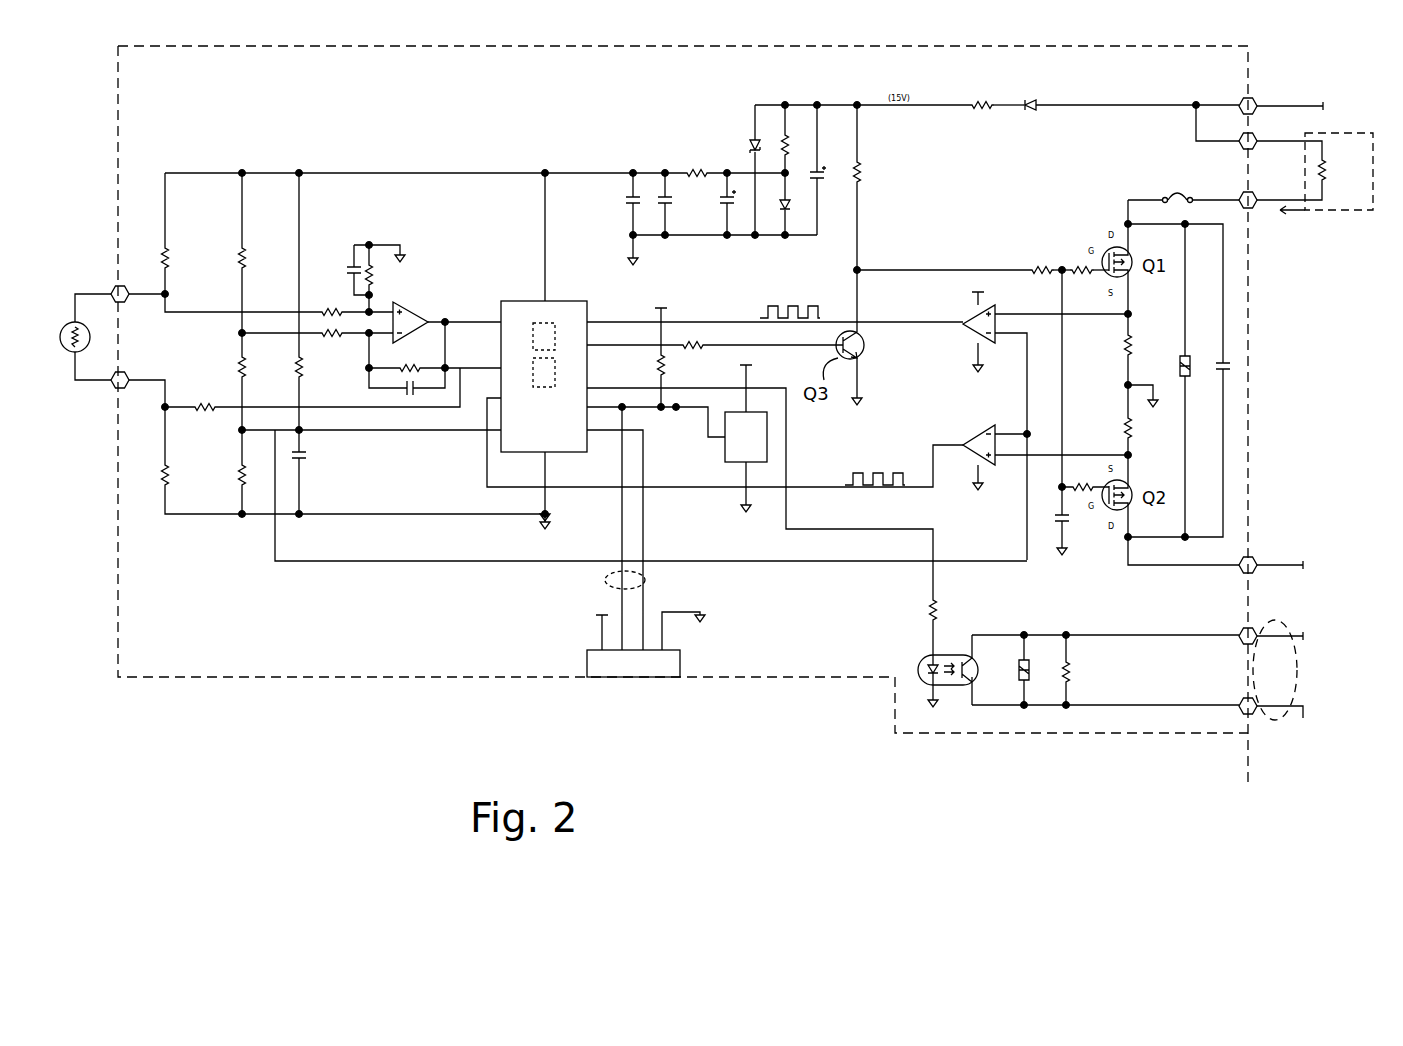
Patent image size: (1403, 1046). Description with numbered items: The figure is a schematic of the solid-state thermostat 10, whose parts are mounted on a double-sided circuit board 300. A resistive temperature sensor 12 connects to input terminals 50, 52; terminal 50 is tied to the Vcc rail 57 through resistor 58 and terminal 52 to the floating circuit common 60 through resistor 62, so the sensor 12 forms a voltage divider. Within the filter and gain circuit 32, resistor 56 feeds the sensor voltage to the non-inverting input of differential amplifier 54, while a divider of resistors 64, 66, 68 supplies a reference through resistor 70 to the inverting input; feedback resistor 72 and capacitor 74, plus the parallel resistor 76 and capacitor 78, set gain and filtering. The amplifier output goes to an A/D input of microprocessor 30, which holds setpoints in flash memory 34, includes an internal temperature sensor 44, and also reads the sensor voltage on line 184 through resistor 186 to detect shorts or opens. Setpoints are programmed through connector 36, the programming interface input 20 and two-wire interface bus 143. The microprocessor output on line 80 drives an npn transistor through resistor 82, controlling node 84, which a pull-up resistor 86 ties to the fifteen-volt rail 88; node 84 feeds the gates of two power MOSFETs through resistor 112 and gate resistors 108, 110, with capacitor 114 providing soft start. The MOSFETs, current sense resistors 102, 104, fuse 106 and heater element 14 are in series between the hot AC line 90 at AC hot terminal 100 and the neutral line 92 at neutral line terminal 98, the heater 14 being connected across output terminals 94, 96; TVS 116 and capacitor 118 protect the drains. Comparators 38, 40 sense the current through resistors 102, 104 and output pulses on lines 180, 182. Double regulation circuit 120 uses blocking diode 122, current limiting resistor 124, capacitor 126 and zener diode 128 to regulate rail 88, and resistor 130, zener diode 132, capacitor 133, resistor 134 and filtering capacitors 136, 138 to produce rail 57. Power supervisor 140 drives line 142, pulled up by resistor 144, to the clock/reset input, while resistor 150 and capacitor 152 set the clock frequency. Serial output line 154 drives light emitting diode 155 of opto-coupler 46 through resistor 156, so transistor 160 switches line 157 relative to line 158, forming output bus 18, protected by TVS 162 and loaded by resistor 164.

The thermostat 10 is at (578, 25).
The temperature sensor 12 is at (65, 355).
The heater element 14 is at (1350, 212).
The output bus 18 is at (1278, 618).
The programming interface input 20 is at (638, 703).
The microprocessor 30 is at (495, 273).
The filter and gain circuit 32 is at (420, 296).
The internal flash memory 34 is at (553, 322).
The connector 36 is at (586, 663).
The comparator 38 is at (968, 343).
The comparator 40 is at (970, 432).
The internal temperature sensor 44 is at (557, 370).
The opto-coupler 46 is at (918, 660).
The input terminal 50 is at (109, 288).
The input terminal 52 is at (113, 388).
The differential amplifier 54 is at (432, 320).
The resistor 56 is at (325, 305).
The Vcc rail 57 is at (438, 172).
The resistor 58 is at (158, 256).
The circuit common 60 is at (392, 250).
The resistor 62 is at (157, 478).
The resistor 64 is at (230, 262).
The resistor 66 is at (230, 365).
The resistor 68 is at (238, 481).
The resistor 70 is at (331, 348).
The feedback resistor 72 is at (406, 368).
The capacitor 74 is at (426, 393).
The resistor 76 is at (384, 276).
The capacitor 78 is at (350, 278).
The line 80 is at (630, 338).
The resistor 82 is at (698, 340).
The node 84 is at (867, 262).
The resistor 86 is at (867, 172).
The DC power rail 88 is at (933, 105).
The hot AC line 90 is at (1262, 557).
The neutral line 92 is at (1278, 107).
The output terminal 94 is at (1238, 152).
The output terminal 96 is at (1245, 195).
The neutral line terminal 98 is at (1238, 97).
The AC hot terminal 100 is at (1238, 575).
The current sense resistor 102 is at (1122, 352).
The current sense resistor 104 is at (1122, 430).
The fuse 106 is at (1165, 192).
The resistor 108 is at (1080, 265).
The resistor 110 is at (1073, 495).
The resistor 112 is at (1038, 265).
The capacitor 114 is at (1050, 518).
The transient voltage suppressor 116 is at (1193, 375).
The capacitor 118 is at (1232, 375).
The double regulation circuit 120 is at (673, 110).
The blocking diode 122 is at (1034, 97).
The current limiting resistor 124 is at (980, 118).
The capacitor 126 is at (825, 182).
The zener diode 128 is at (750, 145).
The resistor 130 is at (800, 139).
The zener diode 132 is at (792, 207).
The capacitor 133 is at (717, 205).
The resistor 134 is at (693, 165).
The filtering capacitor 136 is at (617, 209).
The filtering capacitor 138 is at (640, 175).
The power supervisor 140 is at (722, 455).
The line 142 is at (676, 406).
The two-wire interface bus 143 is at (648, 580).
The pull-up resistor 144 is at (676, 340).
The resistor 150 is at (284, 374).
The capacitor 152 is at (313, 460).
The line 154 is at (793, 438).
The light emitting diode 155 is at (918, 680).
The resistor 156 is at (943, 610).
The line 157 is at (1090, 635).
The line 158 is at (1100, 700).
The transistor 160 is at (988, 690).
The TVS 162 is at (1035, 683).
The load resistor 164 is at (1078, 675).
The line 180 is at (870, 318).
The line 182 is at (818, 492).
The line 184 is at (290, 407).
The resistor 186 is at (205, 378).
The circuit board 300 is at (177, 683).